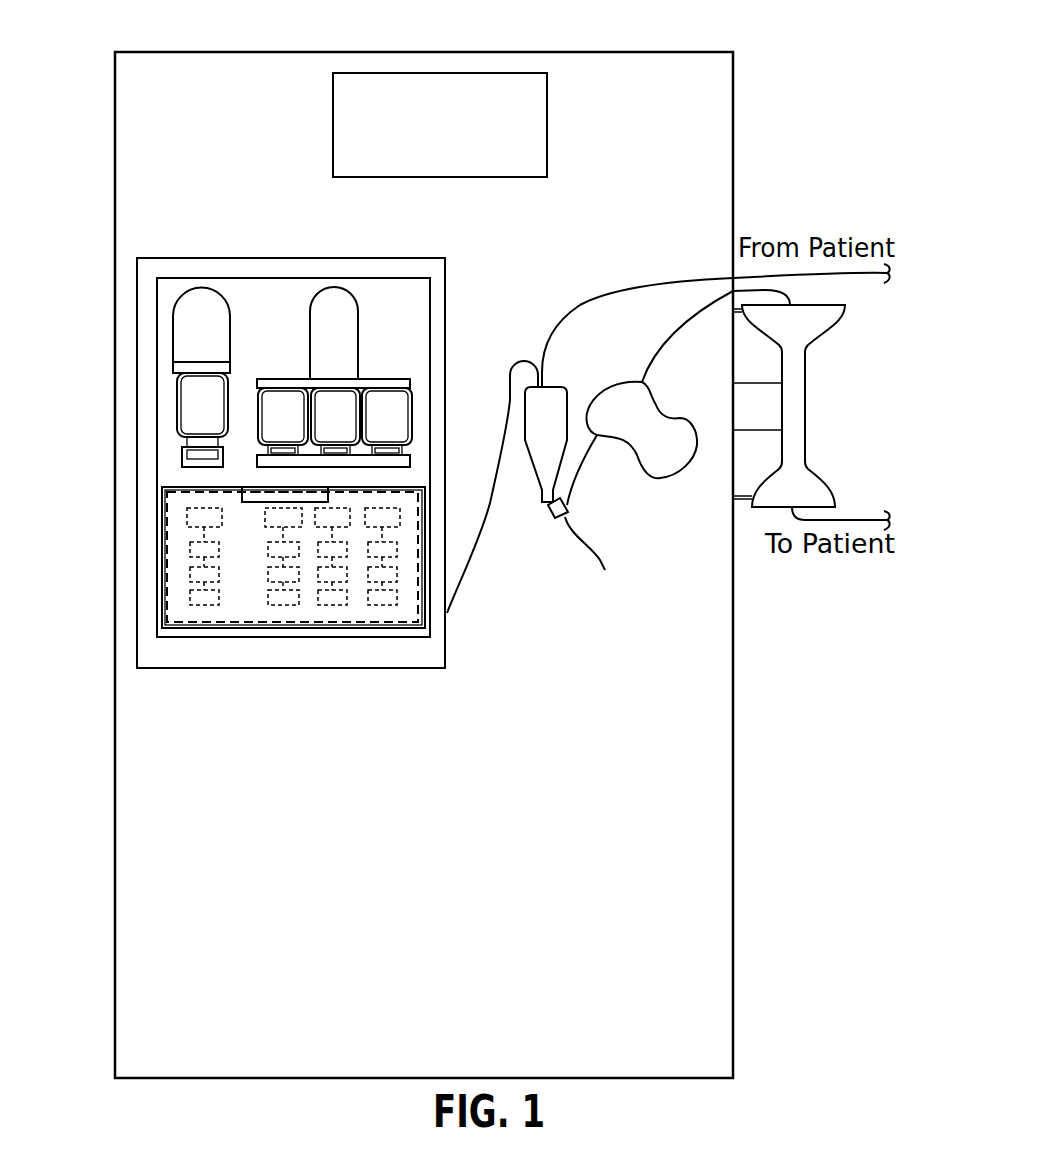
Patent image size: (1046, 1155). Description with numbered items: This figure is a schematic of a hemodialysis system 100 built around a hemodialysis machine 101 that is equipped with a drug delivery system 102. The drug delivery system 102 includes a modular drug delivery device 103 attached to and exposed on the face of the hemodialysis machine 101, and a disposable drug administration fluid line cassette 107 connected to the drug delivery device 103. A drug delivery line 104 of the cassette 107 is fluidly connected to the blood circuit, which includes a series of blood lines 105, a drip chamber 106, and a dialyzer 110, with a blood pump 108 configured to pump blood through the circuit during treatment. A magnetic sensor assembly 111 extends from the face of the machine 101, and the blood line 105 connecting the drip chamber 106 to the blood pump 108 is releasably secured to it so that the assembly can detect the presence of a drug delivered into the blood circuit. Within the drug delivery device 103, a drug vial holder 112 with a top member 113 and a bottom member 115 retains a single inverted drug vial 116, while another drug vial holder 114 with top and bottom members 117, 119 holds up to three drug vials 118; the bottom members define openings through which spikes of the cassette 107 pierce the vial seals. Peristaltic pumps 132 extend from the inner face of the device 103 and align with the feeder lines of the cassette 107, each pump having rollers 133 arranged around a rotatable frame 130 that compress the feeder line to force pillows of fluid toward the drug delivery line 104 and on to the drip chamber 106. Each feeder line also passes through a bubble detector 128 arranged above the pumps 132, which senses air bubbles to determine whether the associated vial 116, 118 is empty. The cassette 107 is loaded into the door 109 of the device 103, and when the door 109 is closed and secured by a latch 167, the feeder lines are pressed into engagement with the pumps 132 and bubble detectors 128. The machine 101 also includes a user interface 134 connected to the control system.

The hemodialysis system 100 is at (787, 105).
The hemodialysis machine 101 is at (489, 49).
The drug delivery system 102 is at (127, 308).
The modular drug delivery device 103 is at (147, 473).
The drug delivery line 104 is at (478, 552).
The blood lines 105 is at (634, 288).
The drip chamber 106 is at (555, 405).
The drug administration fluid line cassette 107 is at (222, 627).
The blood pump 108 is at (658, 468).
The door 109 is at (163, 583).
The dialyzer 110 is at (797, 400).
The magnetic sensor assembly 111 is at (600, 559).
The drug vial holder 112 is at (197, 284).
The top member 113 is at (205, 342).
The drug vial holder 114 is at (332, 284).
The bottom member 115 is at (193, 448).
The drug vial 116 is at (202, 390).
The top member 117 is at (360, 327).
The drug vials 118 is at (340, 402).
The bottom member 119 is at (404, 463).
The bubble detector 128 is at (187, 528).
The rotatable frame 130 is at (398, 582).
The peristaltic pump 132 is at (185, 574).
The rollers 133 is at (370, 607).
The user interface 134 is at (360, 112).
The latch 167 is at (242, 493).